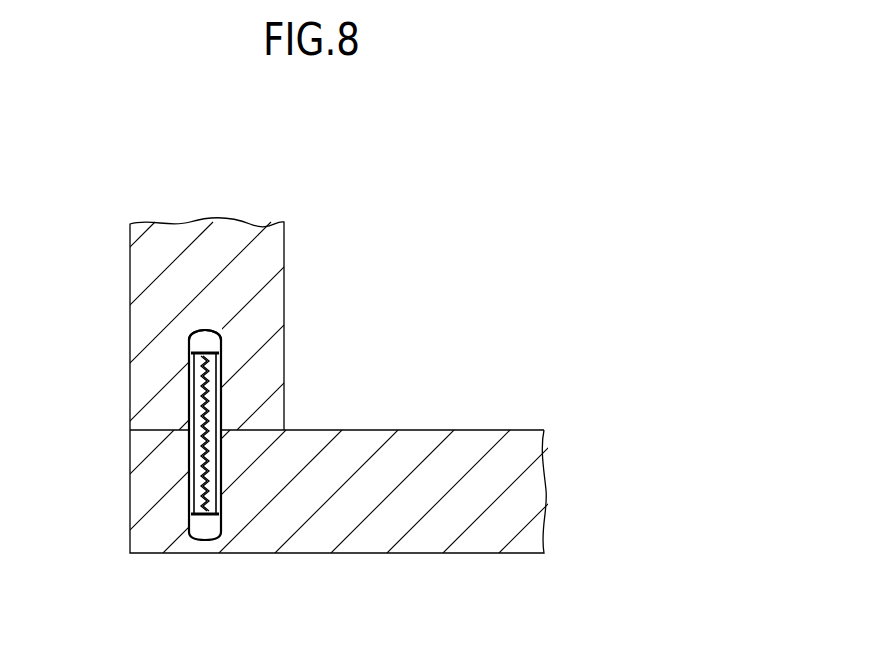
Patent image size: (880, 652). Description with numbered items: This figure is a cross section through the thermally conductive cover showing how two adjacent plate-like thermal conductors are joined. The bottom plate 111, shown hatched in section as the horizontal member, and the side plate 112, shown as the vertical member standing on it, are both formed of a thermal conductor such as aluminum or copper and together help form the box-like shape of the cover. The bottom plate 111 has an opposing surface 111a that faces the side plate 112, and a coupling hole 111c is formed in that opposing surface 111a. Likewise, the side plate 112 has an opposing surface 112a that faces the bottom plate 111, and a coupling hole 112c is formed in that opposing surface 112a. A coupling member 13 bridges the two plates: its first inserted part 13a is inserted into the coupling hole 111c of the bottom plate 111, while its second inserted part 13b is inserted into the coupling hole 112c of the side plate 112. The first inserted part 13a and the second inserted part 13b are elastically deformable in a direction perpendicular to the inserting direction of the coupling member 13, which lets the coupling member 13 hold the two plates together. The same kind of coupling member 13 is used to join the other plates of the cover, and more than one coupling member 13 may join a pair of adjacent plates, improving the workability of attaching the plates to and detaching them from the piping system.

The bottom plate 111 is at (128, 507).
The opposing surface 111a is at (262, 430).
The coupling hole 111c is at (203, 538).
The side plate 112 is at (128, 262).
The opposing surface 112a is at (132, 432).
The coupling hole 112c is at (222, 345).
The coupling member 13 is at (205, 466).
The first inserted part 13a is at (216, 486).
The second inserted part 13b is at (221, 393).